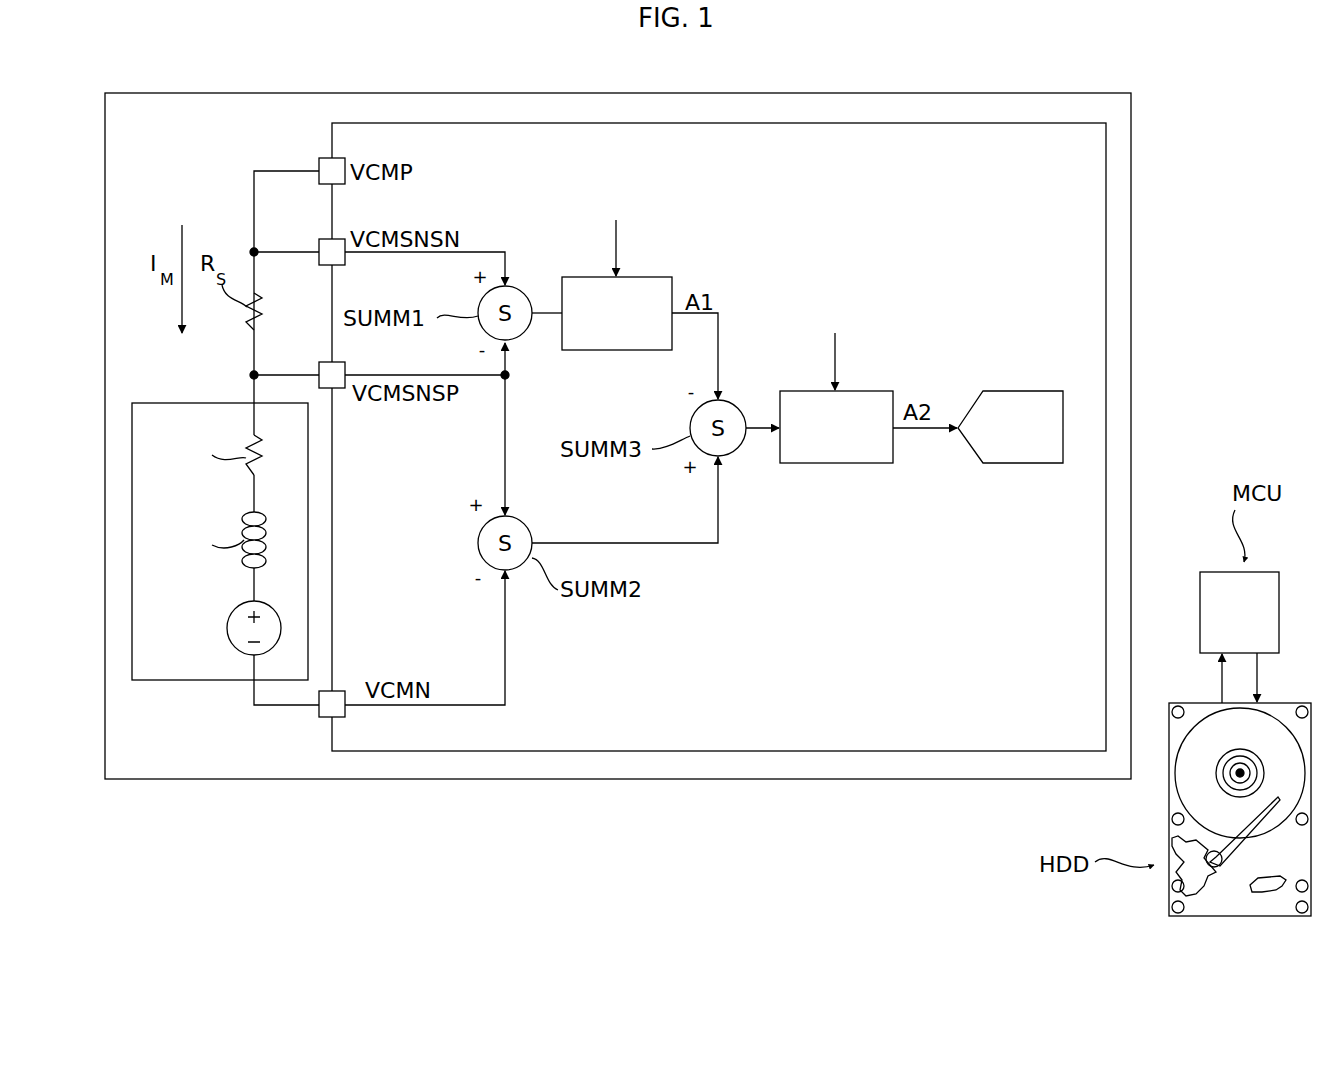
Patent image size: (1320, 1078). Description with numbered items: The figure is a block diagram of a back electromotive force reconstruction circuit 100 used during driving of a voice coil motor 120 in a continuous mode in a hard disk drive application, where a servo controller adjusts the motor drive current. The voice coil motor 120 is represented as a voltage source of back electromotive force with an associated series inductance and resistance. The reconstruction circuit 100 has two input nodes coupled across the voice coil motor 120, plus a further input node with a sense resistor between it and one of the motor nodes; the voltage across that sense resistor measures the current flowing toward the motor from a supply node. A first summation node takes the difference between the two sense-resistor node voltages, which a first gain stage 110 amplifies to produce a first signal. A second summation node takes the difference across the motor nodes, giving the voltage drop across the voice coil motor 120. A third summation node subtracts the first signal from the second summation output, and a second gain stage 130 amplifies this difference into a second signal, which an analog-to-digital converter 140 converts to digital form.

The BEMF reconstruction circuit 100 is at (411, 121).
The first gain stage 110 is at (603, 351).
The voice coil motor 120 is at (195, 684).
The second gain stage 130 is at (838, 464).
The analog-to-digital converter 140 is at (1010, 464).